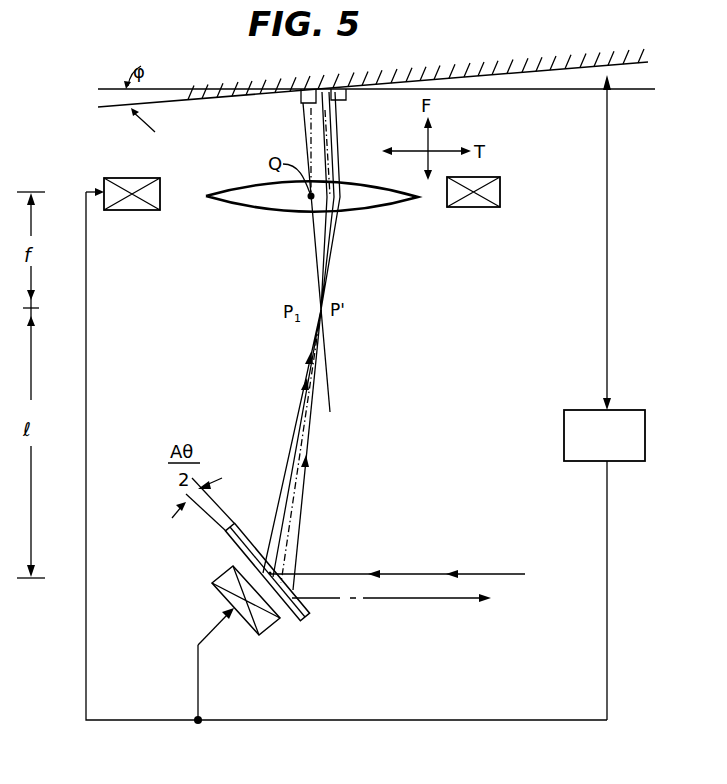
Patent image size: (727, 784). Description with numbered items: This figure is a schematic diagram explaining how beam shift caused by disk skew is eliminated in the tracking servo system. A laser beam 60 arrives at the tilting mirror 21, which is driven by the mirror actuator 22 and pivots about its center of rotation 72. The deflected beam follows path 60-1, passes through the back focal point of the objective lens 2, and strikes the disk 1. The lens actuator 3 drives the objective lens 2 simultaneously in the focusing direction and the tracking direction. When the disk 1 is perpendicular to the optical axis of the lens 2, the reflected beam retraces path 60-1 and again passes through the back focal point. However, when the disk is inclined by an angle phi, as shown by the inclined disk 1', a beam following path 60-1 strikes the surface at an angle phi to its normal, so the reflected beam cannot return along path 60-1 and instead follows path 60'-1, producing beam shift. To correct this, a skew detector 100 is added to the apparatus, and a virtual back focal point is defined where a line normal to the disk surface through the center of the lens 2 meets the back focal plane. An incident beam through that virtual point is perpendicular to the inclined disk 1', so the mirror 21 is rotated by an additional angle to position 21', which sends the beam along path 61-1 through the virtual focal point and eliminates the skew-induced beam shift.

The disk 1 is at (385, 109).
The inclined disk 1' is at (389, 60).
The objective lens 2 is at (230, 203).
The lens actuator 3 is at (482, 207).
The tilting mirror 21 is at (248, 572).
The rotated mirror position 21' is at (267, 559).
The mirror actuator 22 is at (272, 633).
The laser beam 60 is at (397, 571).
The incident beam path 60-1 is at (296, 430).
The reflected beam path 60'-1 is at (352, 276).
The deflected beam 61-1 is at (302, 490).
The center of rotation 72 is at (272, 572).
The skew detector 100 is at (645, 425).